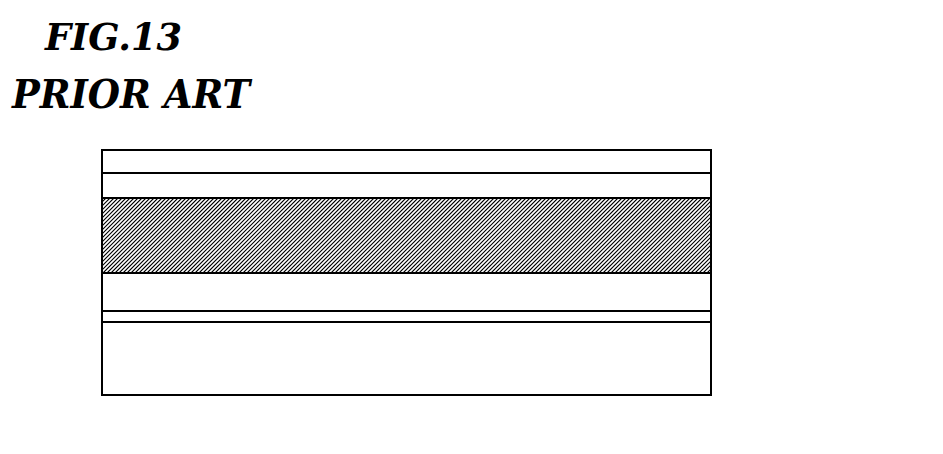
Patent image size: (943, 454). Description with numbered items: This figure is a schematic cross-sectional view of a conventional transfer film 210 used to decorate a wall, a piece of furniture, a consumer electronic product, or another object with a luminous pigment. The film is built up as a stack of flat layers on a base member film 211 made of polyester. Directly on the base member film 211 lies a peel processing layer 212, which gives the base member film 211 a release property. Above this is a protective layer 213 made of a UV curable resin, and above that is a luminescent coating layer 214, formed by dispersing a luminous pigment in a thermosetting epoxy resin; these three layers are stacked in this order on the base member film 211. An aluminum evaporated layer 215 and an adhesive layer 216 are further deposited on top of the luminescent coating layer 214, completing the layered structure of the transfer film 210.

The transfer film 210 is at (688, 108).
The base member film 211 is at (711, 364).
The peel processing layer 212 is at (711, 315).
The protective layer 213 is at (711, 285).
The luminescent coating layer 214 is at (711, 230).
The aluminum evaporated layer 215 is at (711, 185).
The adhesive layer 216 is at (711, 158).